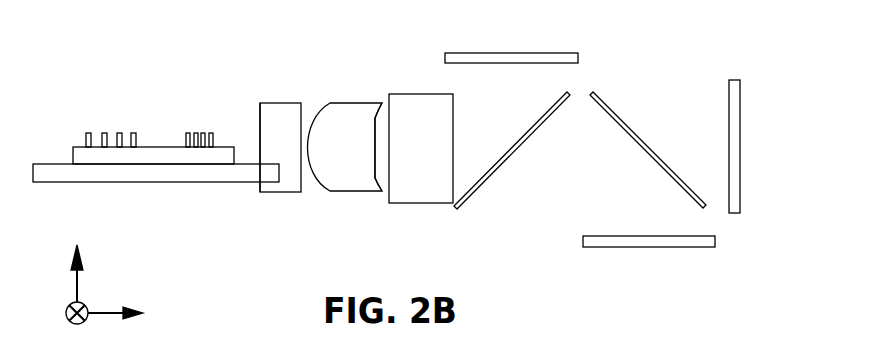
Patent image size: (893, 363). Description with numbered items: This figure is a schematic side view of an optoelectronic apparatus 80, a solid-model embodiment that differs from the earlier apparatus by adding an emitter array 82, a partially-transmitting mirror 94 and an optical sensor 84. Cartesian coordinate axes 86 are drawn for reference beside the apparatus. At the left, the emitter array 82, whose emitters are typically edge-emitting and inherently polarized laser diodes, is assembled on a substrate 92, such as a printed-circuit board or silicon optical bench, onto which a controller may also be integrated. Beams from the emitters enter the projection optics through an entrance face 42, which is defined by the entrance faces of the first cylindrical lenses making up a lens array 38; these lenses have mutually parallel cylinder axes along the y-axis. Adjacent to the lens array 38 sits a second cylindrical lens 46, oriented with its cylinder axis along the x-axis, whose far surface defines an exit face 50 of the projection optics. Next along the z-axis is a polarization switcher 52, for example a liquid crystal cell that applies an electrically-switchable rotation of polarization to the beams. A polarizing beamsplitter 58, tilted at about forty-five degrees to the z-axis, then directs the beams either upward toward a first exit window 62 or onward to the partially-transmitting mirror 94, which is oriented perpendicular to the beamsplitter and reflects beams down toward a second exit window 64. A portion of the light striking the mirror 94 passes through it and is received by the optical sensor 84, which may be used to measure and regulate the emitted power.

The optoelectronic apparatus 80 is at (125, 63).
The substrate 92 is at (80, 174).
The emitter array 82 is at (168, 157).
The lens array 38 is at (285, 183).
The entrance face 42 is at (260, 128).
The second cylindrical lens 46 is at (348, 170).
The exit face 50 is at (365, 121).
The polarization switcher 52 is at (423, 182).
The polarizing beamsplitter 58 is at (468, 192).
The first exit window 62 is at (502, 53).
The partially-transmitting mirror 94 is at (618, 113).
The optical sensor 84 is at (740, 108).
The second exit window 64 is at (628, 248).
The Cartesian coordinate axes 86 is at (108, 316).